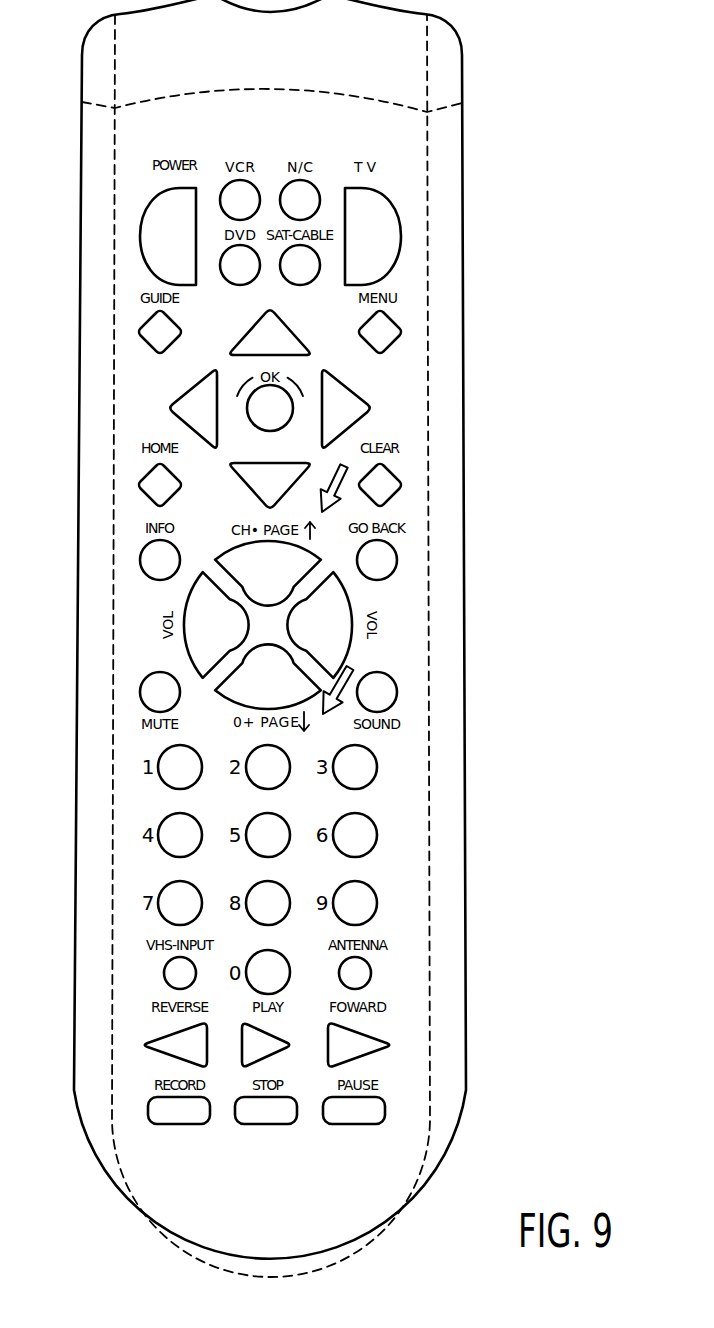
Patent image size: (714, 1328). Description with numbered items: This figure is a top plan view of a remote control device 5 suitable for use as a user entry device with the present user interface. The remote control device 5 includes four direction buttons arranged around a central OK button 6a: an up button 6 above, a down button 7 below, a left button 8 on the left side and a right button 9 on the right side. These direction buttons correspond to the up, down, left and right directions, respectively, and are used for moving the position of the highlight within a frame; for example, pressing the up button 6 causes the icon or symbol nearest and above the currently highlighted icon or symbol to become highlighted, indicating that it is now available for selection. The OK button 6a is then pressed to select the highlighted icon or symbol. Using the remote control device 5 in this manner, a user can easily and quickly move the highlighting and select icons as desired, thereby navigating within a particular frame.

The remote control device 5 is at (472, 45).
The up button 6 is at (290, 347).
The OK button 6a is at (267, 400).
The down button 7 is at (287, 480).
The left button 8 is at (187, 408).
The right button 9 is at (350, 408).